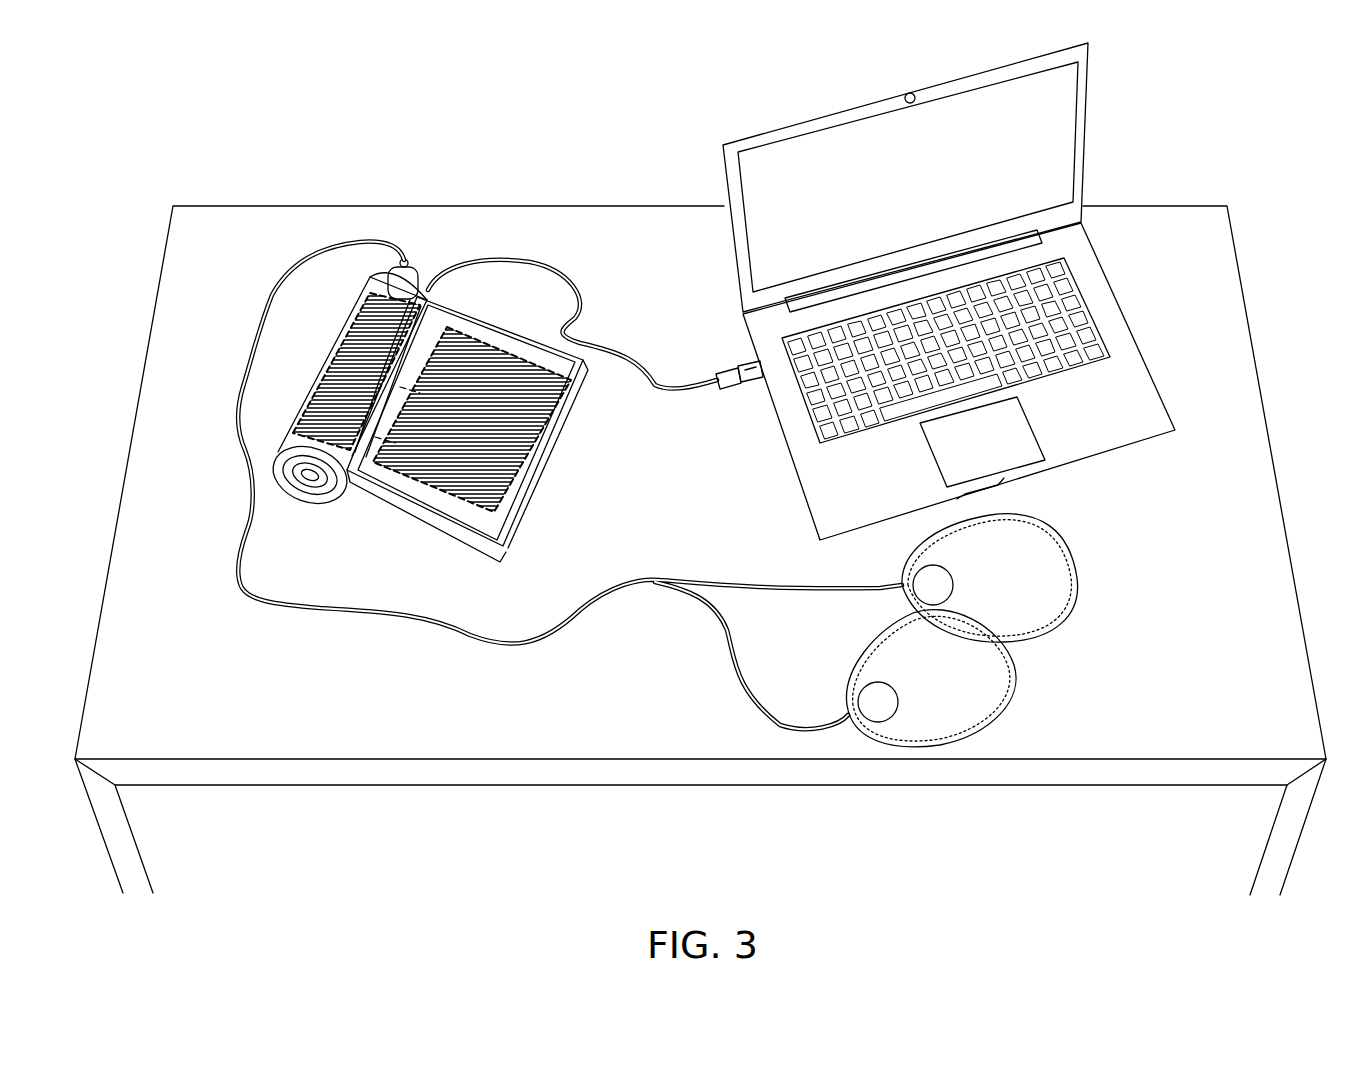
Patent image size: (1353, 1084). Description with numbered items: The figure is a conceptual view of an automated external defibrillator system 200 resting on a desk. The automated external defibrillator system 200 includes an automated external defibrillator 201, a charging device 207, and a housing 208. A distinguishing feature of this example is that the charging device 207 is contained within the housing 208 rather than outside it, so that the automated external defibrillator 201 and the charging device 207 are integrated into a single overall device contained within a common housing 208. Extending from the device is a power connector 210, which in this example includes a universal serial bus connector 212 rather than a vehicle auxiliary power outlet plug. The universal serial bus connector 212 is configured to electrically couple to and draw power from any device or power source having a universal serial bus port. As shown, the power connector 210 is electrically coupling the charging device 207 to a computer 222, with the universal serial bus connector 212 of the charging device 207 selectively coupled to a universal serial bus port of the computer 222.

The automated external defibrillator system 200 is at (633, 454).
The automated external defibrillator 201 is at (268, 396).
The charging device 207 is at (372, 328).
The housing 208 is at (436, 512).
The power connector 210 is at (670, 398).
The universal serial bus connector 212 is at (740, 393).
The computer 222 is at (1143, 404).